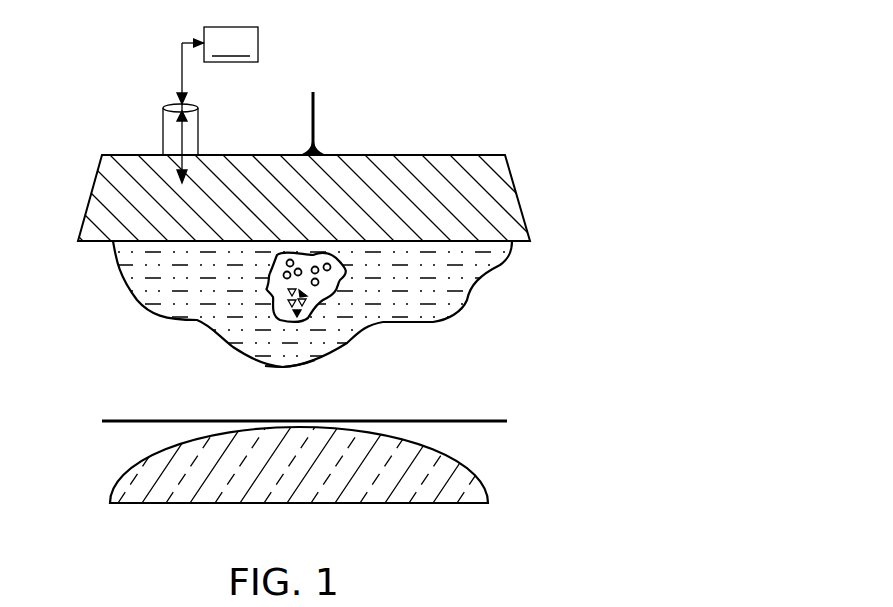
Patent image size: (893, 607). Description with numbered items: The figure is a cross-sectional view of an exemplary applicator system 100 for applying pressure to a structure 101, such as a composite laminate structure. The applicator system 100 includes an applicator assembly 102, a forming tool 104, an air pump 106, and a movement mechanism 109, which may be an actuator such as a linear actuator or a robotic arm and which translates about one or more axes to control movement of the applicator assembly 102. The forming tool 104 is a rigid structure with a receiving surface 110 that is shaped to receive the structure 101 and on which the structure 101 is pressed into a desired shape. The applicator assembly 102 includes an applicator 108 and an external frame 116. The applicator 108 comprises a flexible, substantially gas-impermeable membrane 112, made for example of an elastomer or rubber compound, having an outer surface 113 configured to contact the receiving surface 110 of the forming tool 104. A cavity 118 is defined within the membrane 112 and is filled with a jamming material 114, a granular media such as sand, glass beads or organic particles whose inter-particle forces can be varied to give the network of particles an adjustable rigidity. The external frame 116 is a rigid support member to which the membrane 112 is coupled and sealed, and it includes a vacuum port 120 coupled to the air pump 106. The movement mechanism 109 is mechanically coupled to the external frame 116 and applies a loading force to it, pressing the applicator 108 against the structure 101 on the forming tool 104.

The applicator system 100 is at (476, 50).
The structure 101 is at (118, 421).
The applicator assembly 102 is at (390, 153).
The forming tool 104 is at (193, 503).
The air pump 106 is at (231, 44).
The applicator 108 is at (146, 267).
The movement mechanism 109 is at (316, 120).
The receiving surface 110 is at (143, 458).
The membrane 112 is at (354, 340).
The outer surface 113 is at (315, 363).
The jamming material 114 is at (286, 303).
The external frame 116 is at (473, 155).
The cavity 118 is at (279, 276).
The vacuum port 120 is at (198, 107).